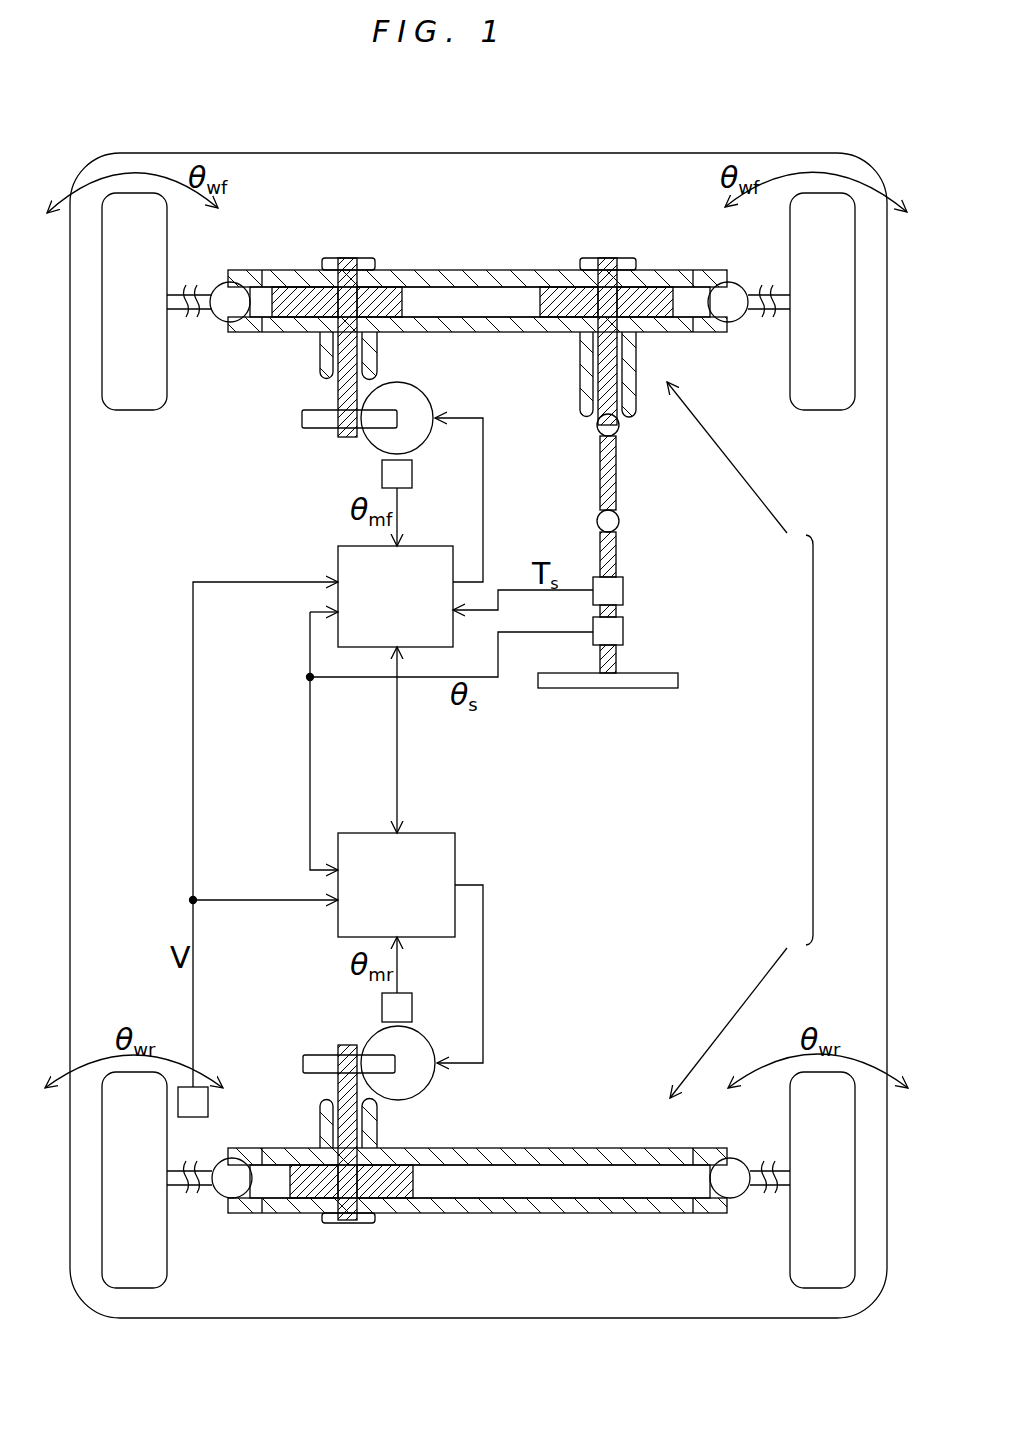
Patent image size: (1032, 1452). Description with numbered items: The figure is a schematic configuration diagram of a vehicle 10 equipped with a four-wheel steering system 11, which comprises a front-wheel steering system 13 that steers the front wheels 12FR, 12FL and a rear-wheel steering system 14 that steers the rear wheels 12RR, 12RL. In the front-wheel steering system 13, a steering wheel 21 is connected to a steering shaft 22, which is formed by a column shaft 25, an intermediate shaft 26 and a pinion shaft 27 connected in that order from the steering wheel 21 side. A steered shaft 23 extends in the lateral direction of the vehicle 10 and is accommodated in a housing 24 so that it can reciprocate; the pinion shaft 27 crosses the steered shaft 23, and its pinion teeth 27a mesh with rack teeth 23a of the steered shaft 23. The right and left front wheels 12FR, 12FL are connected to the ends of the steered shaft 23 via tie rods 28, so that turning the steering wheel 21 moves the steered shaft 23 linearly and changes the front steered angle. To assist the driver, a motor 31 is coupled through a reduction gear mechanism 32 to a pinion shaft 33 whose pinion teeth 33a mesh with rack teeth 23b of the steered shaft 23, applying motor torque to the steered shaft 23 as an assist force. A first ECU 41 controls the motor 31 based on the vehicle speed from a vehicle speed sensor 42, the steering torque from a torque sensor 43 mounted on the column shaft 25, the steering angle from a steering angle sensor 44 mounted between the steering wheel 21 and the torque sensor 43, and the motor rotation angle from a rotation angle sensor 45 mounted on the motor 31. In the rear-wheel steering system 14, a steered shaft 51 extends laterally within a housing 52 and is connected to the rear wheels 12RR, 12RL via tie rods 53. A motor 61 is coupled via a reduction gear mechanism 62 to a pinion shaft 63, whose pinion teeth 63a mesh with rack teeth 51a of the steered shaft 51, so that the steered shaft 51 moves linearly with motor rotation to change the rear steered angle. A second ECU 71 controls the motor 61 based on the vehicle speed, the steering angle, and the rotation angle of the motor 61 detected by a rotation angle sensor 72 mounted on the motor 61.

The vehicle 10 is at (87, 118).
The four-wheel steering system 11 is at (833, 740).
The front wheel 12FL is at (137, 400).
The front wheel 12FR is at (822, 398).
The rear wheel 12RL is at (133, 1270).
The rear wheel 12RR is at (822, 1270).
The front-wheel steering system 13 is at (740, 476).
The rear-wheel steering system 14 is at (741, 1006).
The steering wheel 21 is at (560, 682).
The steering shaft 22 is at (554, 534).
The steered shaft 23 is at (472, 298).
The rack teeth 23a is at (550, 298).
The rack teeth 23b is at (305, 300).
The housing 24 is at (283, 282).
The column shaft 25 is at (580, 581).
The intermediate shaft 26 is at (608, 468).
The pinion shaft 27 is at (588, 395).
The pinion teeth 27a is at (608, 288).
The tie rods 28 is at (203, 318).
The motor 31 is at (422, 386).
The reduction gear mechanism 32 is at (323, 425).
The pinion shaft 33 is at (345, 390).
The pinion teeth 33a is at (345, 292).
The first electronic control unit 41 is at (335, 558).
The vehicle speed sensor 42 is at (210, 1108).
The torque sensor 43 is at (623, 592).
The steering angle sensor 44 is at (623, 630).
The rotation angle sensor 45 is at (413, 474).
The steered shaft 51 is at (488, 1190).
The rack teeth 51a is at (400, 1205).
The housing 52 is at (582, 1213).
The tie rods 53 is at (200, 1192).
The motor 61 is at (417, 1090).
The reduction gear mechanism 62 is at (325, 1058).
The pinion shaft 63 is at (342, 1088).
The pinion teeth 63a is at (348, 1214).
The second ECU 71 is at (337, 923).
The rotation angle sensor 72 is at (412, 1012).